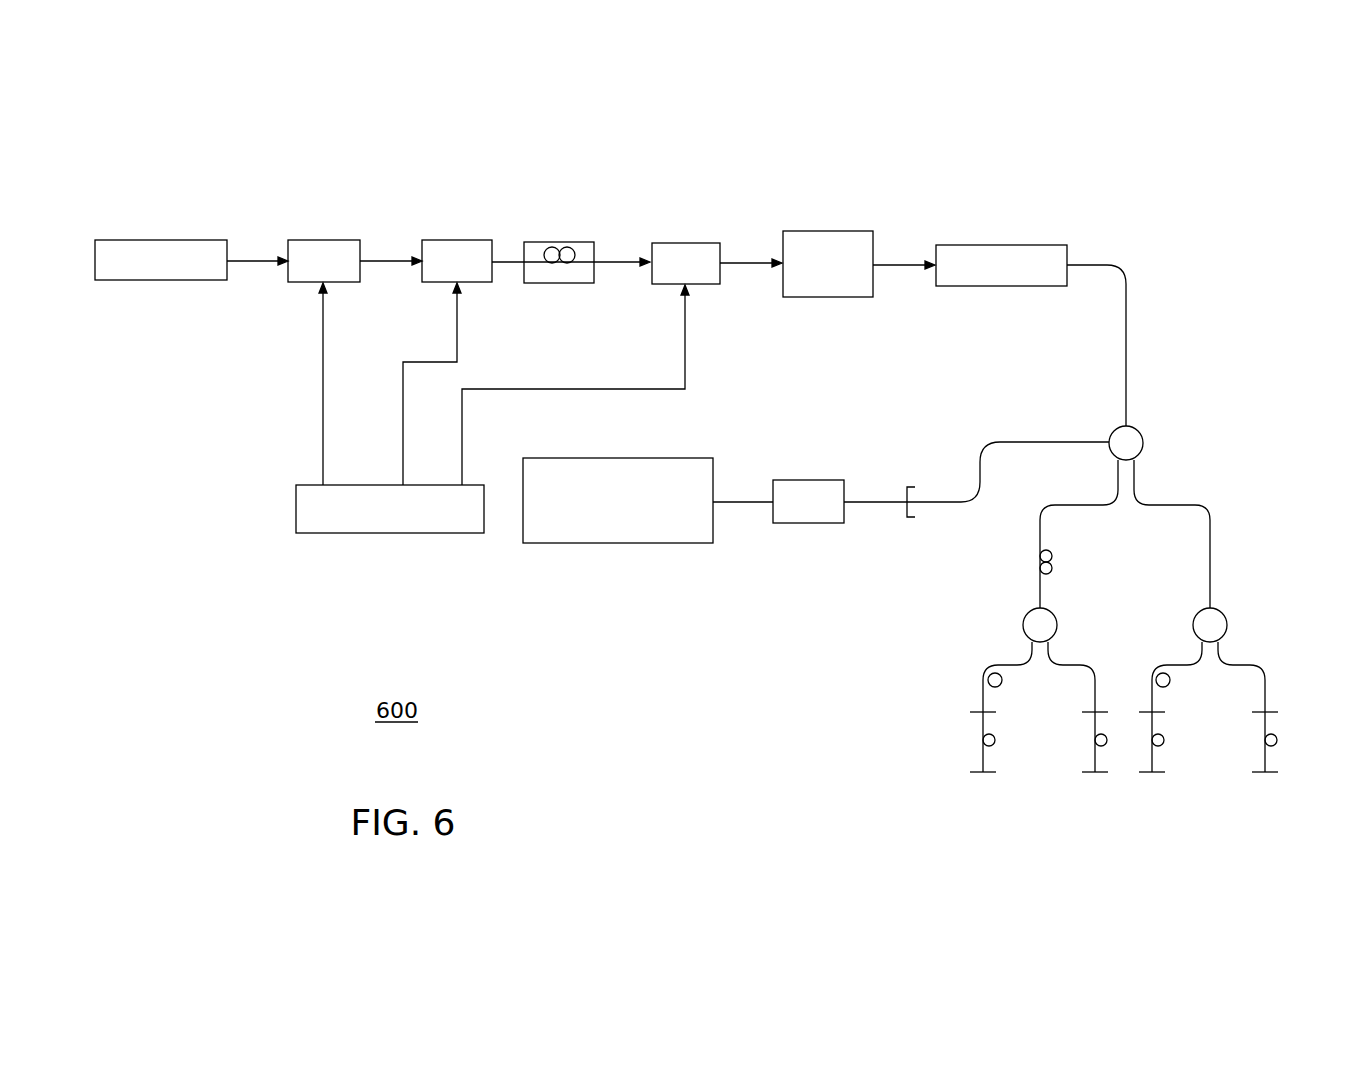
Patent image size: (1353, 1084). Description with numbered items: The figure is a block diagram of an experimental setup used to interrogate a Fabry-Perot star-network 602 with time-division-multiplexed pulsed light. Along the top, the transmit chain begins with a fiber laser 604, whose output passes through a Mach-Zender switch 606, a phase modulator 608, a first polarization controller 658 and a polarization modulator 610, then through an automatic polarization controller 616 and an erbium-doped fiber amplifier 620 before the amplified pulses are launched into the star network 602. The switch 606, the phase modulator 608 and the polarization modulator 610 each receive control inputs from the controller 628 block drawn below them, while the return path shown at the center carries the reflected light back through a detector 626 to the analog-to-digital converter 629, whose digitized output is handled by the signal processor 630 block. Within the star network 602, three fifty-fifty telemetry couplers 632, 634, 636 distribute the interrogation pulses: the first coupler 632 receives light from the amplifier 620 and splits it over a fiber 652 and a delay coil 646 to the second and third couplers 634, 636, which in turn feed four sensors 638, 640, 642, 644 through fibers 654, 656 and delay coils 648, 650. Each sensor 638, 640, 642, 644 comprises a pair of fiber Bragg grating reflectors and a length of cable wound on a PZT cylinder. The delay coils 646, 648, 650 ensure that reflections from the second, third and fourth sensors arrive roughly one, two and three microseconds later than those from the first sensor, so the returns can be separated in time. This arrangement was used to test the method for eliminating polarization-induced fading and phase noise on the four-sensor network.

The Fabry-Perot star-network 602 is at (1262, 427).
The fiber laser 604 is at (168, 239).
The Mach-Zender switch 606 is at (328, 239).
The phase modulator 608 is at (460, 239).
The first polarization controller 658 is at (562, 241).
The polarization modulator 610 is at (687, 242).
The automatic polarization controller 616 is at (830, 230).
The erbium-doped fiber amplifier 620 is at (1006, 244).
The detector 626 is at (910, 486).
The analog-to-digital converter 628 is at (395, 534).
The analog to digital converter 629 is at (810, 524).
The controller 630 is at (620, 544).
The 50/50% coupler 632 is at (1143, 452).
The 50/50% coupler 634 is at (1052, 610).
The 50/50% coupler 636 is at (1222, 610).
The sensor 638 is at (971, 758).
The sensor 640 is at (1078, 758).
The sensor 642 is at (1141, 758).
The sensor 644 is at (1246, 758).
The delay coil 646 is at (1047, 548).
The delay coil 648 is at (1002, 686).
The delay coil 650 is at (1170, 686).
The fiber 652 is at (1212, 535).
The fiber 654 is at (1097, 680).
The fiber 656 is at (1267, 680).